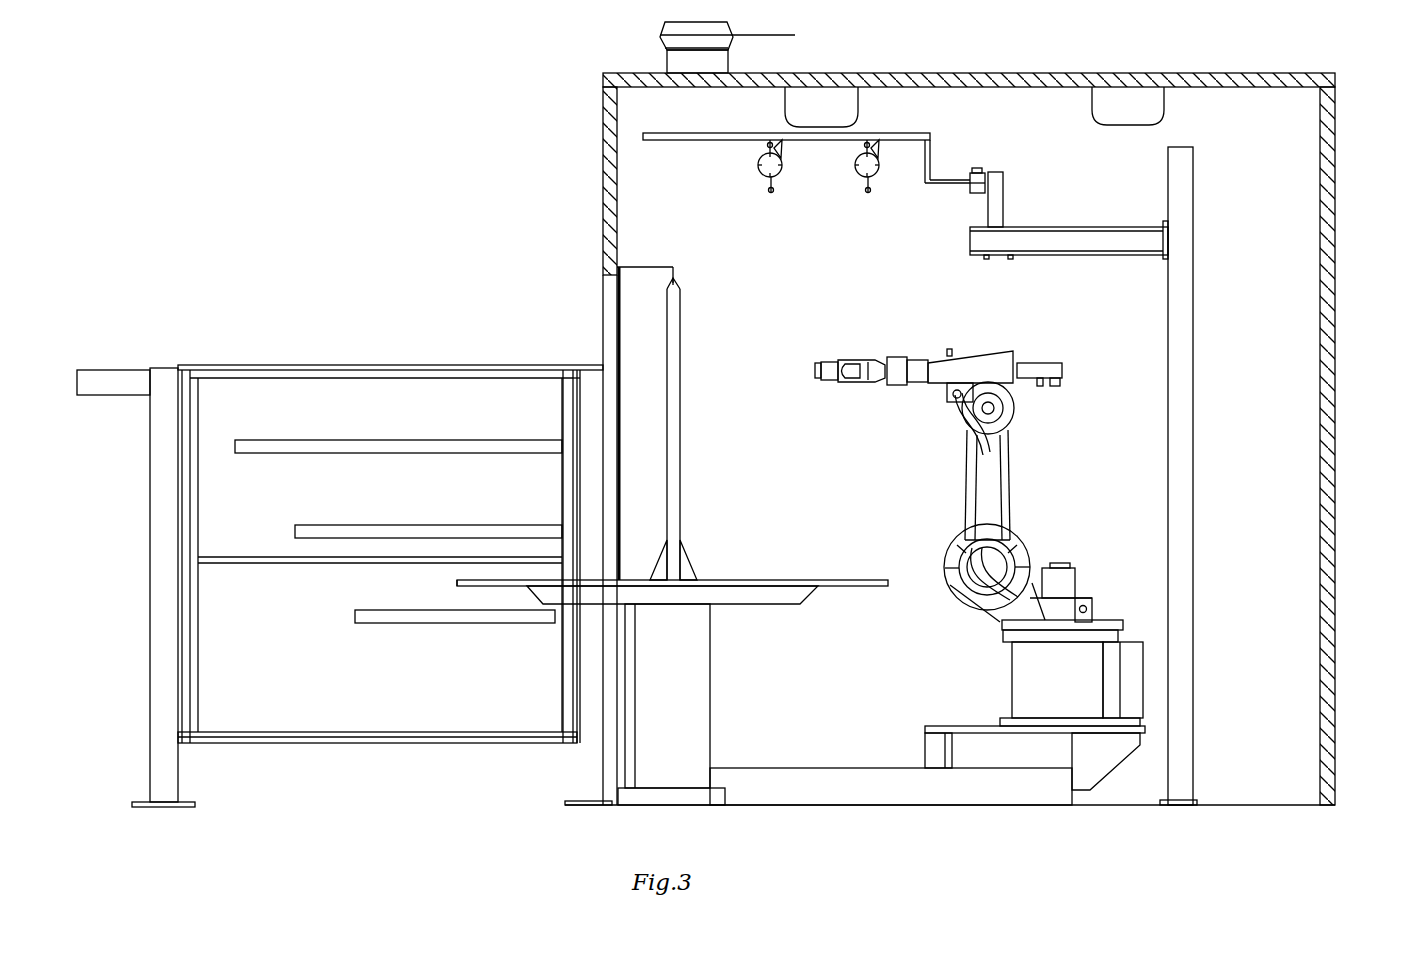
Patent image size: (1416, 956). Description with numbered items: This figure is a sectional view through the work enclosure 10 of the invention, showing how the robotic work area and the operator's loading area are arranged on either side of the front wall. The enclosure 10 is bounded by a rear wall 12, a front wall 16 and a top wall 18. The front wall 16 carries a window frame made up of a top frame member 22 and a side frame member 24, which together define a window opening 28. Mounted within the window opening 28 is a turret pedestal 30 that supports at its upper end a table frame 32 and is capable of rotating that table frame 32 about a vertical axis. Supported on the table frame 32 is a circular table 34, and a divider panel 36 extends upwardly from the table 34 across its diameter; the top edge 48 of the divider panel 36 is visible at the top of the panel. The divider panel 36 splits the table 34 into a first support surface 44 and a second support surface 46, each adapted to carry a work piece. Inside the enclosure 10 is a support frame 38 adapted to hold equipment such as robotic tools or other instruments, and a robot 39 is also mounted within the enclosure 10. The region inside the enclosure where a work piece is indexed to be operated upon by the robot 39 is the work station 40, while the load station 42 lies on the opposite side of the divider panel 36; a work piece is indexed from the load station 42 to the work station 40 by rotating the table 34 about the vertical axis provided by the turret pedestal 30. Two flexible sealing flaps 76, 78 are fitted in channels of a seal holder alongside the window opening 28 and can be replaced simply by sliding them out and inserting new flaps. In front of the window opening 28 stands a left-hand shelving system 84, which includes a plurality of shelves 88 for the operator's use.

The work enclosure 10 is at (318, 127).
The rear wall 12 is at (1325, 212).
The front wall 16 is at (606, 175).
The top wall 18 is at (992, 75).
The top frame member 22 is at (660, 268).
The side frame member 24 is at (637, 393).
The window opening 28 is at (612, 285).
The turret pedestal 30 is at (702, 683).
The table frame 32 is at (777, 600).
The table 34 is at (846, 578).
The divider panel 36 is at (690, 342).
The support frame 38 is at (1112, 226).
The robot 39 is at (1022, 350).
The work station 40 is at (755, 578).
The load station 42 is at (537, 578).
The first support surface 44 is at (460, 578).
The second support surface 46 is at (830, 578).
The top edge 48 is at (685, 288).
The flexible sealing flap 76 is at (683, 278).
The flexible sealing flap 78 is at (640, 270).
The left-hand shelving system 84 is at (302, 358).
The shelves 88 is at (372, 607).